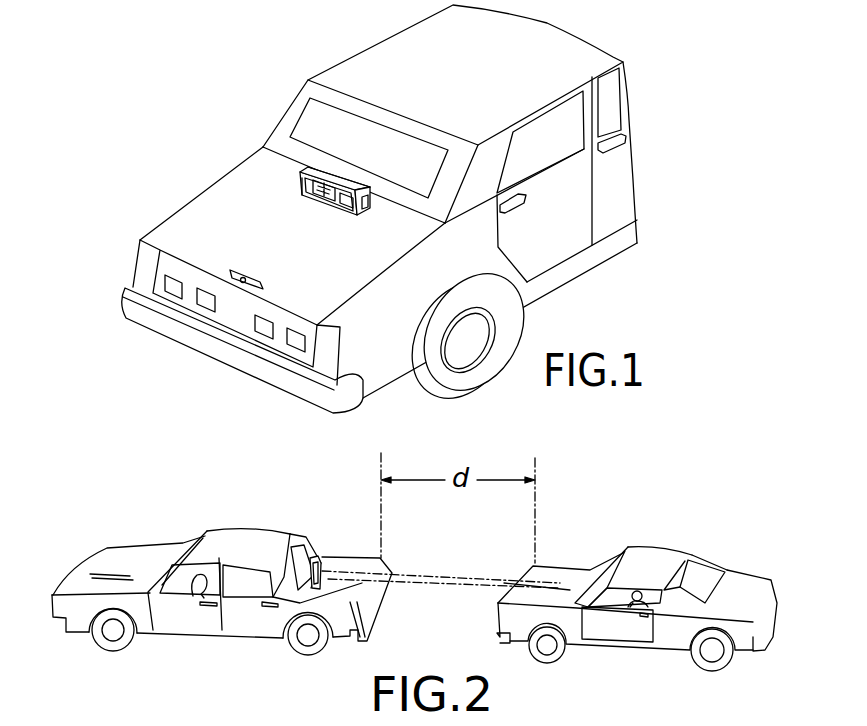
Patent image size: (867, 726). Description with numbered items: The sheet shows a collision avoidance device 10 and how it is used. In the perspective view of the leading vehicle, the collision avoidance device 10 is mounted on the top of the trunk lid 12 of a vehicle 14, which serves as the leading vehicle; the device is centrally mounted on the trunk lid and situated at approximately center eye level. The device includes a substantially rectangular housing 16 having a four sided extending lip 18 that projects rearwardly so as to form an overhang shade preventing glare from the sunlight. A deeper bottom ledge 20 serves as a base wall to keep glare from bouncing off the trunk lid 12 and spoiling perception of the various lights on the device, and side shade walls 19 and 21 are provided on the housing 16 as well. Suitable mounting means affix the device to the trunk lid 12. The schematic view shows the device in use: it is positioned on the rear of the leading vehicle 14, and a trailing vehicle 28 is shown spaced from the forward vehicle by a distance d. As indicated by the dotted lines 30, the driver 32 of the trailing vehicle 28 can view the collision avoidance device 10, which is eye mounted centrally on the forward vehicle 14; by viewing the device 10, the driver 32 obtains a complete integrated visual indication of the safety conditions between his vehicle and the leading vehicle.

In FIG. 1, the collision avoidance device 10 is at (328, 198).
In FIG. 2, the collision avoidance device 10 is at (329, 553).
In FIG. 1, the trunk lid 12 is at (236, 166).
In FIG. 1, the vehicle 14 is at (379, 210).
In FIG. 2, the vehicle 14 is at (247, 524).
In FIG. 1, the housing 16 is at (317, 170).
In FIG. 1, the four sided extending lip 18 is at (292, 165).
In FIG. 1, the side shade wall 19 is at (302, 178).
In FIG. 1, the bottom ledge 20 is at (333, 207).
In FIG. 1, the side shade wall 21 is at (370, 207).
In FIG. 2, the trailing vehicle 28 is at (660, 546).
In FIG. 2, the dotted lines 30 is at (447, 577).
In FIG. 2, the driver 32 is at (633, 608).